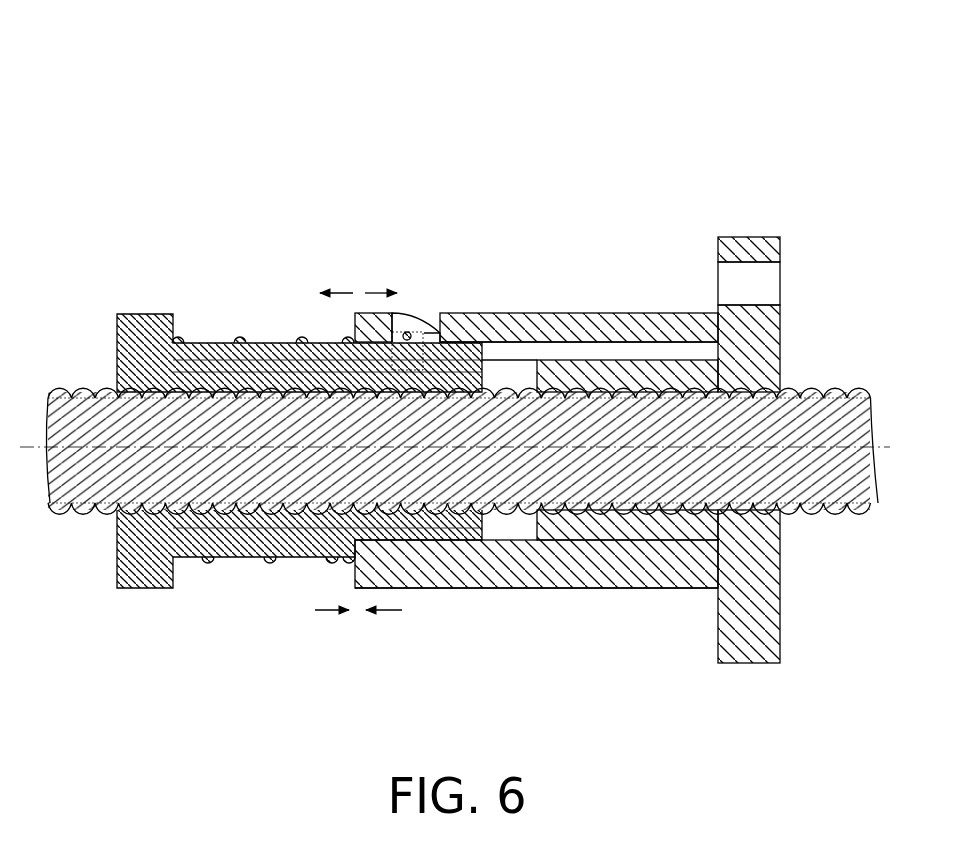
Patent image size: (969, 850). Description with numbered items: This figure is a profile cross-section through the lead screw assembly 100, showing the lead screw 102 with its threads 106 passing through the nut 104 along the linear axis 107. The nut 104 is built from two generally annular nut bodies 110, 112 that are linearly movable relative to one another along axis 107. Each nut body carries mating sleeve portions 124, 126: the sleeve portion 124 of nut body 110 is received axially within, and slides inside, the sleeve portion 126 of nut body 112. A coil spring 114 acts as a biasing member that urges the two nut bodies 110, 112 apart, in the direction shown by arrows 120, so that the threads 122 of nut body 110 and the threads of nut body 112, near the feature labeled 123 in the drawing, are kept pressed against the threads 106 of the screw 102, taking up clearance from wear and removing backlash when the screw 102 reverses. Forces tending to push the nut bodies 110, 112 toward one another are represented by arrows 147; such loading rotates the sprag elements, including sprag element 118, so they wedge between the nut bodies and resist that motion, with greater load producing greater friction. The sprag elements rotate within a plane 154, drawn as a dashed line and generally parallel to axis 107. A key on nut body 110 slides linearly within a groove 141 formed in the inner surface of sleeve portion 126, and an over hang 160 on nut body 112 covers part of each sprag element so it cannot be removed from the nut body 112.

The lead screw assembly 100 is at (287, 86).
The lead screw 102 is at (212, 343).
The nut 104 is at (708, 162).
The threads 106 is at (100, 385).
The axis 107 is at (815, 385).
The nut body 110 is at (252, 246).
The nut body 112 is at (582, 212).
The coil spring 114 is at (268, 568).
The sprag element 118 is at (425, 318).
The arrows 120 is at (342, 290).
The threads 122 is at (280, 342).
The housing inner surface 123 is at (582, 318).
The sleeve portion 124 is at (449, 590).
The sleeve portion 126 is at (468, 582).
The groove 141 is at (637, 318).
The arrows 147 is at (327, 613).
The plane 154 is at (497, 358).
The over hang 160 is at (440, 318).